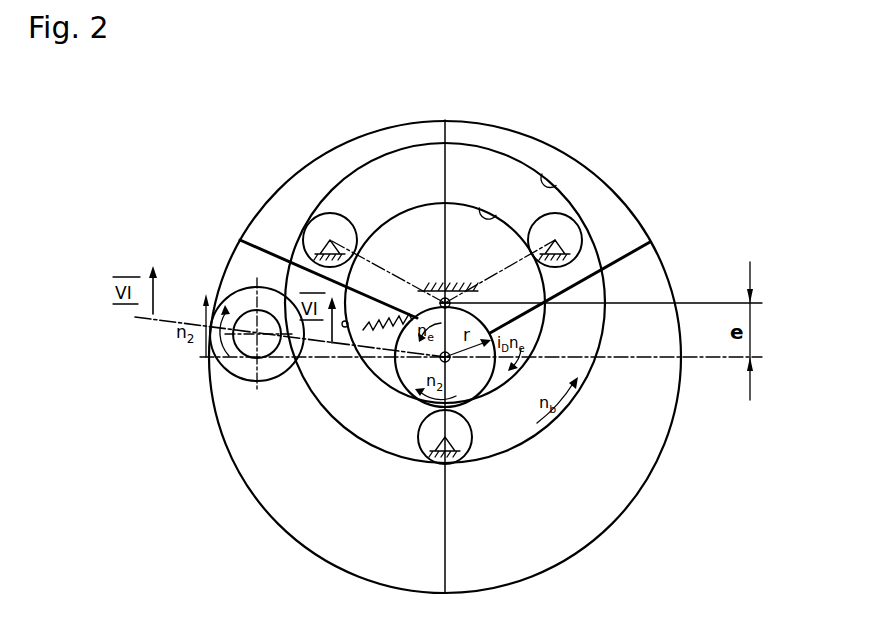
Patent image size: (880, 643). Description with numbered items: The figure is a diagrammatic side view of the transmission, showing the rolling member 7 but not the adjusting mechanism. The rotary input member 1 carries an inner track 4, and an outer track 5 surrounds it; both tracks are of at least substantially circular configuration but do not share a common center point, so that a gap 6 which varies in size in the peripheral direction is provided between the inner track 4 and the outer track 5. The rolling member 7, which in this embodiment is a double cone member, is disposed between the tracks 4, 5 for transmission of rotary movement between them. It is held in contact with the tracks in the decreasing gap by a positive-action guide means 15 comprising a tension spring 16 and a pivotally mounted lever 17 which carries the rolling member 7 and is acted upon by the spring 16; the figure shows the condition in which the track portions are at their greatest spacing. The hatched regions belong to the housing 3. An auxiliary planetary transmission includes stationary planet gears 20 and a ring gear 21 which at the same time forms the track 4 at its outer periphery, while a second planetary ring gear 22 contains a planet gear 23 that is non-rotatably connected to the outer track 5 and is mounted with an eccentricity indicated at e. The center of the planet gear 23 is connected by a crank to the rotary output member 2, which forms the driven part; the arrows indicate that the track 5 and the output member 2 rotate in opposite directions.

The rotary input member 1 is at (344, 446).
The rotary output member 2 is at (452, 303).
The housing 3 is at (326, 236).
The inner track 4 is at (556, 416).
The outer track 5 is at (493, 587).
The gap 6 is at (400, 541).
The rolling member 7 is at (226, 390).
The positive-action guide means 15 is at (386, 300).
The tension spring 16 is at (358, 336).
The pivotally mounted lever 17 is at (343, 324).
The stationary planet gears 20 is at (321, 226).
The ring gear 21 is at (546, 178).
The second planetary ring gear 22 is at (478, 207).
The planet gear 23 is at (468, 381).